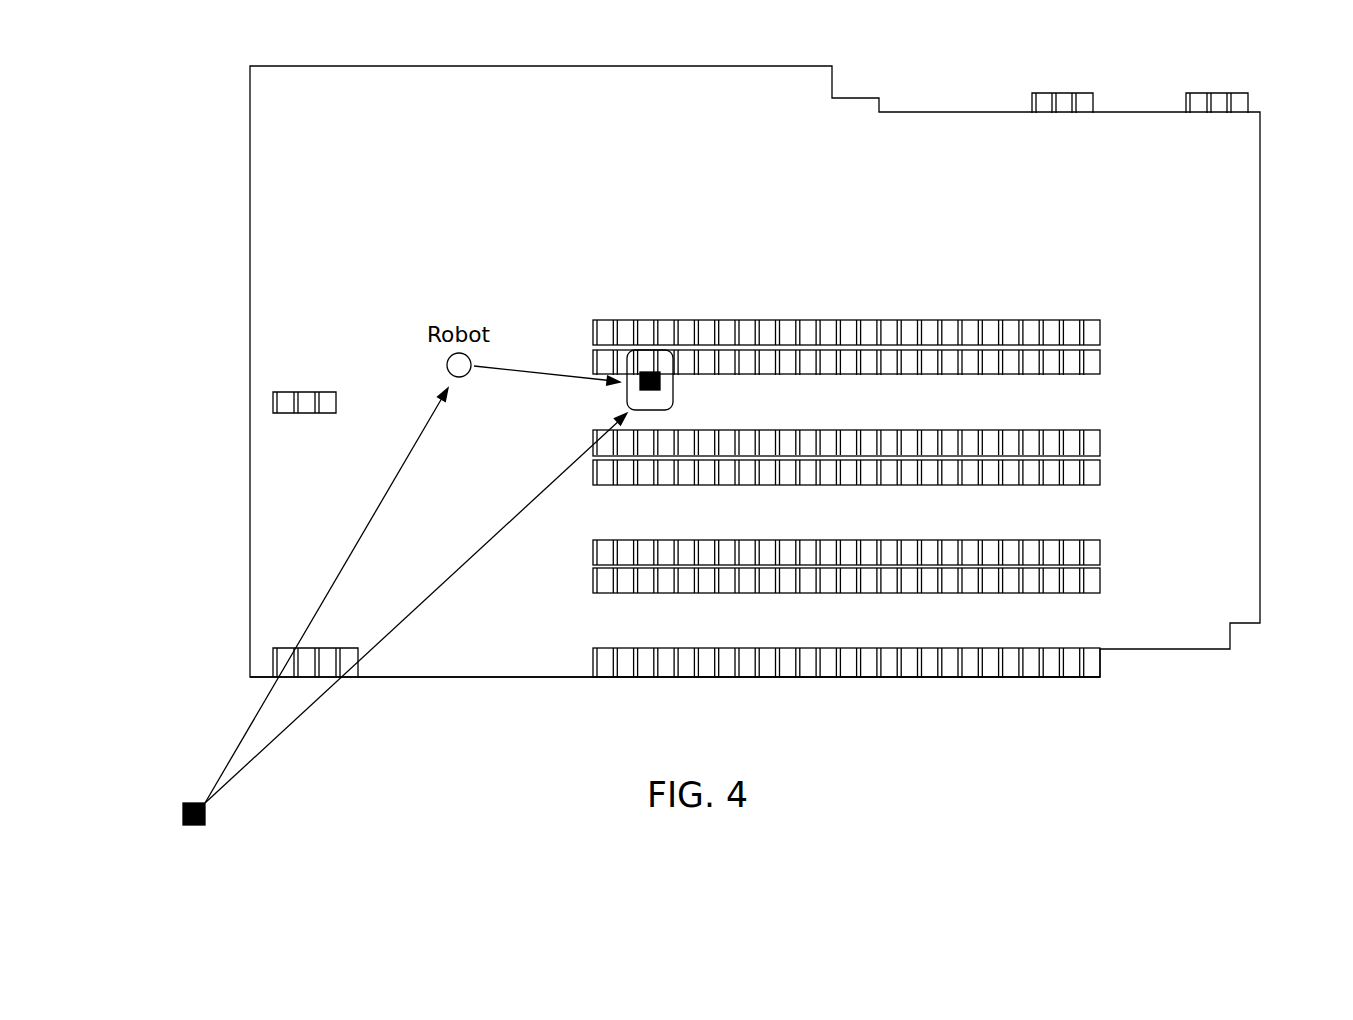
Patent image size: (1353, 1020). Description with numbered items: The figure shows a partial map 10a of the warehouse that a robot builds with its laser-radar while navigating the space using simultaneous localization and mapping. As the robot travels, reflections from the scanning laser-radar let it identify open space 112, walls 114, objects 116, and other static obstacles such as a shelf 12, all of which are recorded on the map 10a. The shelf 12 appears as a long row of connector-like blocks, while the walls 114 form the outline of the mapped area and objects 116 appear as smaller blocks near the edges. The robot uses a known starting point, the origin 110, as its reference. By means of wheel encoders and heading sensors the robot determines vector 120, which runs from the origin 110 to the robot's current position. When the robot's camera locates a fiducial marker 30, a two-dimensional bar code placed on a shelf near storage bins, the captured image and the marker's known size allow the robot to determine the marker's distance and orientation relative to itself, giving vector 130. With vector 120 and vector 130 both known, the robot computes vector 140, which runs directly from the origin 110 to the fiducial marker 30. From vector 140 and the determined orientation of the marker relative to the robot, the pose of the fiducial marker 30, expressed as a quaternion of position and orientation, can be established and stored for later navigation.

The map 10a is at (737, 211).
The shelf 12 is at (884, 332).
The open space 112 is at (990, 416).
The walls 114 is at (516, 680).
The objects 116 is at (305, 392).
The fiducial marker 30 is at (627, 400).
The vector 130 is at (547, 356).
The vector 120 is at (367, 527).
The vector 140 is at (458, 570).
The origin 110 is at (183, 815).